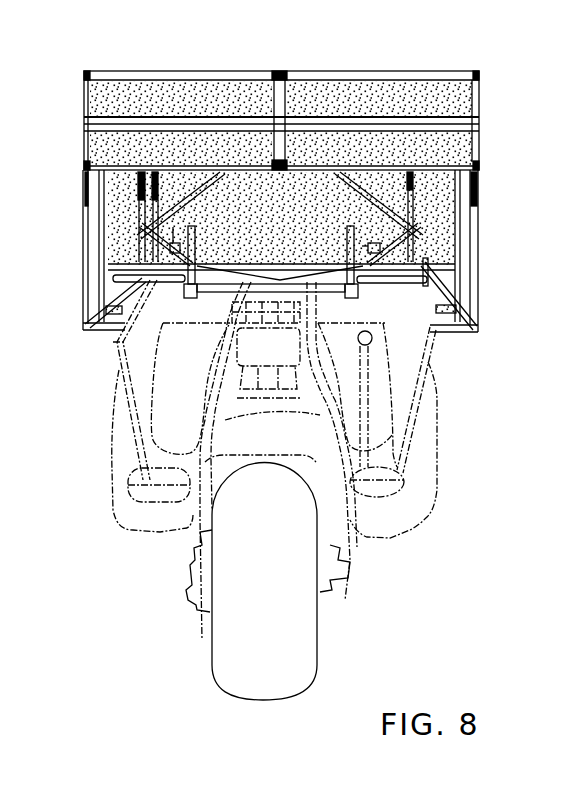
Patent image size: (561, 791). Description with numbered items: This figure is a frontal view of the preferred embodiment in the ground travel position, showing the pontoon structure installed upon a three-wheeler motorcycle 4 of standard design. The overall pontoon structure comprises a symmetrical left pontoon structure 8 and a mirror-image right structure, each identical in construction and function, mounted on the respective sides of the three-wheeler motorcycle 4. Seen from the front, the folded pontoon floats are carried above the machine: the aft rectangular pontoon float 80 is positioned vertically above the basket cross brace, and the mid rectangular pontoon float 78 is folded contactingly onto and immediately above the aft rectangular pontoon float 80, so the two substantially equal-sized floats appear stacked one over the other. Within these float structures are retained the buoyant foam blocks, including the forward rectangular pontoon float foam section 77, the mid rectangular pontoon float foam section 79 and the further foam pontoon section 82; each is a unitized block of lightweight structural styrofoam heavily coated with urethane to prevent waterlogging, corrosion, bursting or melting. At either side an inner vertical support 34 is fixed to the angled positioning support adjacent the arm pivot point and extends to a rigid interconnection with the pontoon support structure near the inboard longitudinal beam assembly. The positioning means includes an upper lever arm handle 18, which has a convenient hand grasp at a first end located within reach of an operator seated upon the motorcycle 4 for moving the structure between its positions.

The three-wheeler motorcycle 4 is at (210, 618).
The left pontoon structure 8 is at (480, 172).
The upper lever arm handle 18 is at (84, 172).
The inner vertical support 34 is at (103, 232).
The forward rectangular pontoon float foam section 77 is at (245, 225).
The mid rectangular pontoon float 78 is at (222, 78).
The mid rectangular pontoon float foam section 79 is at (142, 96).
The aft rectangular pontoon float 80 is at (85, 145).
The foam pontoon section 82 is at (201, 159).